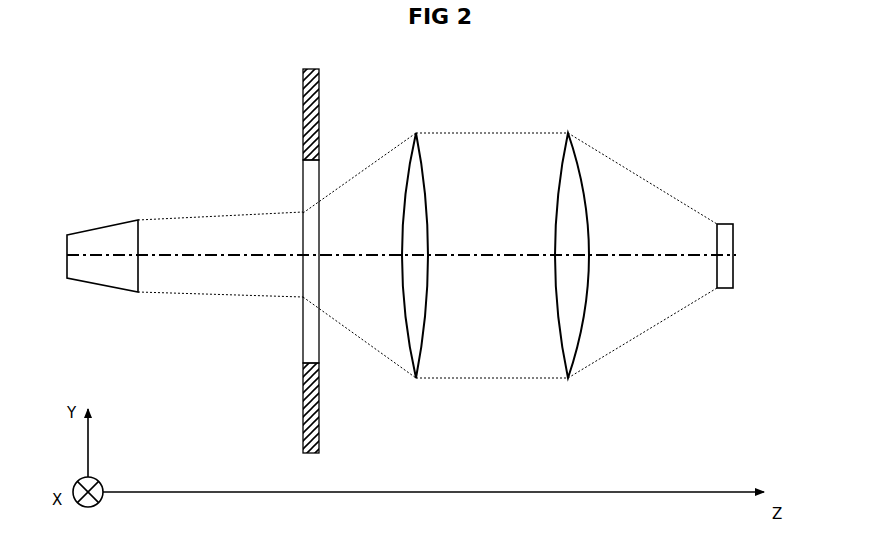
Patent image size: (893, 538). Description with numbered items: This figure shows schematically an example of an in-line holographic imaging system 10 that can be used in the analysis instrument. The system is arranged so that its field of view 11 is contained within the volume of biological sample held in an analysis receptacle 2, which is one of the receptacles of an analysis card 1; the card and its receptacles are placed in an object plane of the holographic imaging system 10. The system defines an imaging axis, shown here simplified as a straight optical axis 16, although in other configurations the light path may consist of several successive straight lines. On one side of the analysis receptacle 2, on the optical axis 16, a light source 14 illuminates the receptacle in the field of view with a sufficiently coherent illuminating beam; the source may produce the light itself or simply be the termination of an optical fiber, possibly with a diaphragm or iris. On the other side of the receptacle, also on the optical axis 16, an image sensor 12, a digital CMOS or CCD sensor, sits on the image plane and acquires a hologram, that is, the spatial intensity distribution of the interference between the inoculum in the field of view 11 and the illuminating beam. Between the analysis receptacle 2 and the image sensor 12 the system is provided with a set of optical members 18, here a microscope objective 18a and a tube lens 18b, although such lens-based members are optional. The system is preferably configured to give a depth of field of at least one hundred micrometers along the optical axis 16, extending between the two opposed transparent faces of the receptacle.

The analysis card 1 is at (319, 95).
The analysis receptacle 2 is at (303, 170).
The holographic imaging system 10 is at (651, 92).
The field of view 11 is at (301, 240).
The image sensor 12 is at (722, 224).
The light source 14 is at (102, 222).
The optical axis 16 is at (645, 234).
The set of optical members 18 is at (505, 213).
The microscope objective 18a is at (416, 133).
The tube lens 18b is at (568, 133).